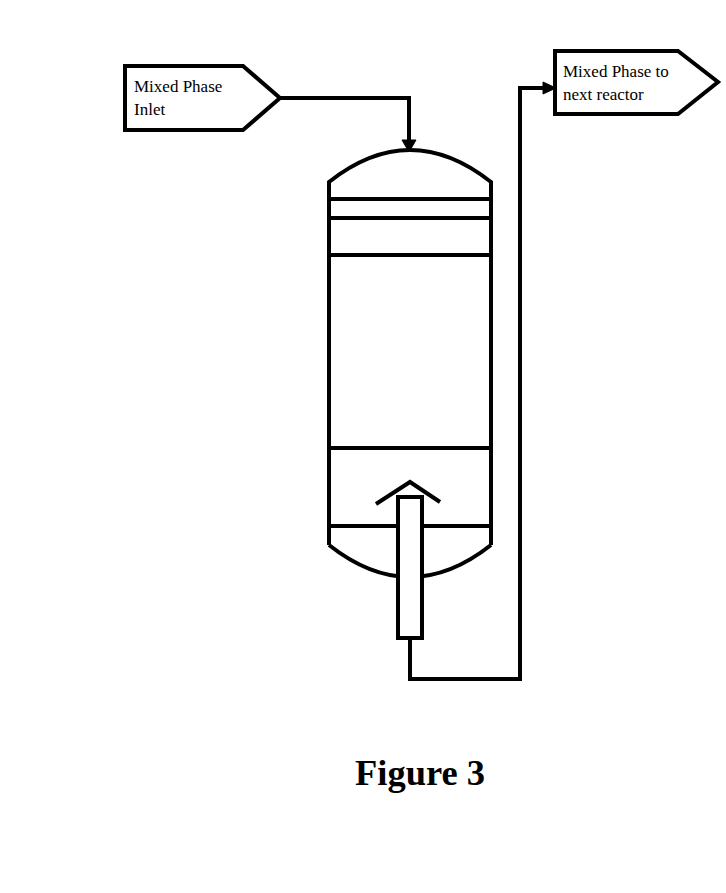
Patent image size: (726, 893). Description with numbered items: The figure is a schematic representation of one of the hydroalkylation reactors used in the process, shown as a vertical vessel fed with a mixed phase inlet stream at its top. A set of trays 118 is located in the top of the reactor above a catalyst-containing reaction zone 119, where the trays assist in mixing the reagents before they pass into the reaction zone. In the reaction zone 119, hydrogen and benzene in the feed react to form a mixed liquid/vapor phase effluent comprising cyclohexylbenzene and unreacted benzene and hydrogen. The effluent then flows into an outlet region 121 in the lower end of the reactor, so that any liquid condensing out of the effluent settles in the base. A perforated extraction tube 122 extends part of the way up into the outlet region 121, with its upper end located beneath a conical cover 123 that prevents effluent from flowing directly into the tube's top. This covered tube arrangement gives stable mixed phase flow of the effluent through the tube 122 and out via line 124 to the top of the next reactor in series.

The set of trays 118 is at (329, 209).
The catalyst-containing reaction zone 119 is at (329, 325).
The outlet region 121 is at (329, 477).
The perforated extraction tube 122 is at (422, 593).
The conical cover 123 is at (397, 493).
The line 124 is at (520, 662).